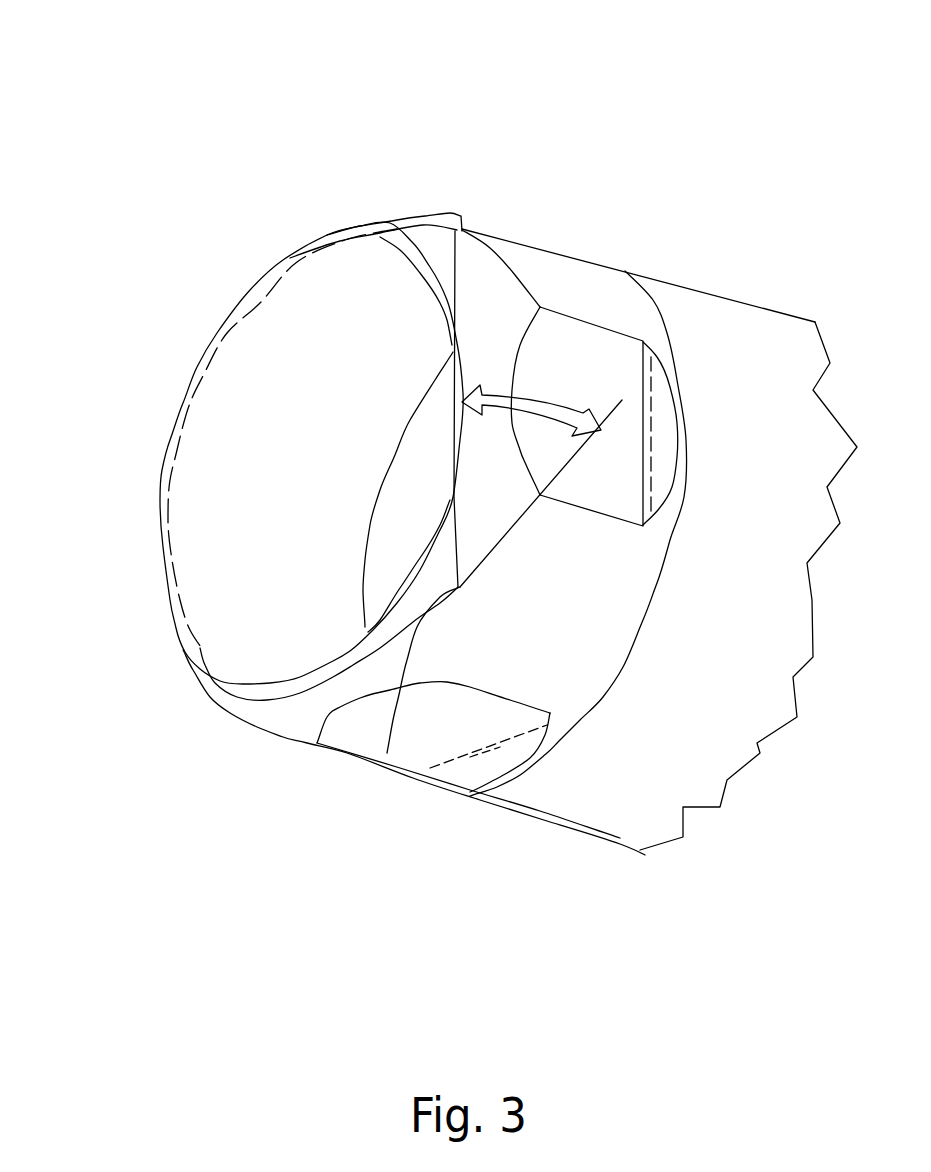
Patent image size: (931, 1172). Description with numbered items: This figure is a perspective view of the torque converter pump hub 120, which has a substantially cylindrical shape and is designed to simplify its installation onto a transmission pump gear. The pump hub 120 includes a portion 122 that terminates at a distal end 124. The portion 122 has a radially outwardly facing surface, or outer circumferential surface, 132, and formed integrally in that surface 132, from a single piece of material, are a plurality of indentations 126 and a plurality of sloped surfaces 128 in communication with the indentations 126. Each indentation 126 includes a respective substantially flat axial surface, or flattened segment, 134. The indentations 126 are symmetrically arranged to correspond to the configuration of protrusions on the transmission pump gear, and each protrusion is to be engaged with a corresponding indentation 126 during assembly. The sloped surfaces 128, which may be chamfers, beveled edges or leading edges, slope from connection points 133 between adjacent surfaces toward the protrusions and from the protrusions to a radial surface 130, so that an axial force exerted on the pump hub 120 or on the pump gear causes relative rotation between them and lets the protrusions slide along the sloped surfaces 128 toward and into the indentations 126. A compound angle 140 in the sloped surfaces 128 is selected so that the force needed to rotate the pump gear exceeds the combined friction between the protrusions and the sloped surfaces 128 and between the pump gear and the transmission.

The pump hub 120 is at (135, 104).
The portion 122 is at (438, 177).
The distal end 124 is at (284, 227).
The plurality of indentations 126 is at (620, 325).
The plurality of sloped surfaces 128 is at (490, 247).
The radial surface 130 is at (207, 663).
The radially outwardly facing surface 132 is at (460, 587).
The connection points 133 is at (387, 753).
The substantially flat axial surface 134 is at (570, 350).
The compound angle 140 is at (550, 415).